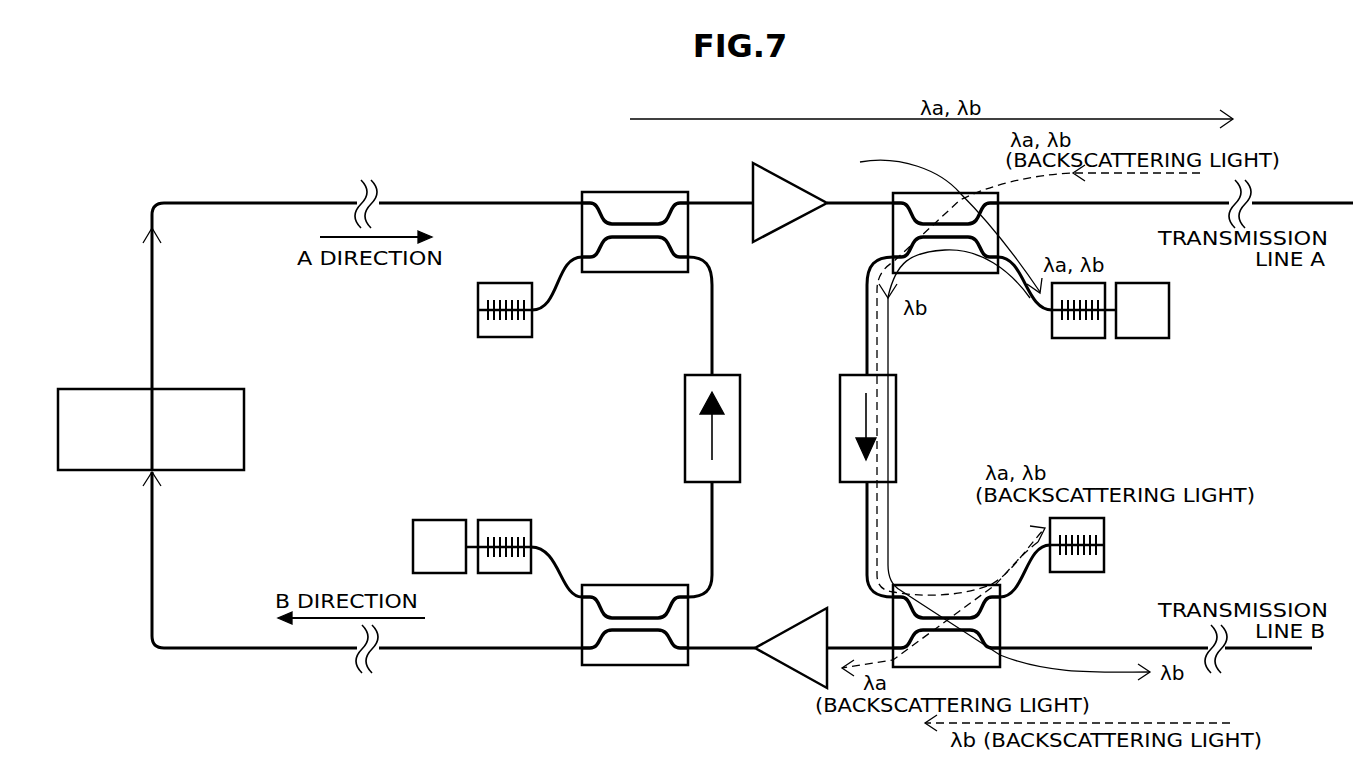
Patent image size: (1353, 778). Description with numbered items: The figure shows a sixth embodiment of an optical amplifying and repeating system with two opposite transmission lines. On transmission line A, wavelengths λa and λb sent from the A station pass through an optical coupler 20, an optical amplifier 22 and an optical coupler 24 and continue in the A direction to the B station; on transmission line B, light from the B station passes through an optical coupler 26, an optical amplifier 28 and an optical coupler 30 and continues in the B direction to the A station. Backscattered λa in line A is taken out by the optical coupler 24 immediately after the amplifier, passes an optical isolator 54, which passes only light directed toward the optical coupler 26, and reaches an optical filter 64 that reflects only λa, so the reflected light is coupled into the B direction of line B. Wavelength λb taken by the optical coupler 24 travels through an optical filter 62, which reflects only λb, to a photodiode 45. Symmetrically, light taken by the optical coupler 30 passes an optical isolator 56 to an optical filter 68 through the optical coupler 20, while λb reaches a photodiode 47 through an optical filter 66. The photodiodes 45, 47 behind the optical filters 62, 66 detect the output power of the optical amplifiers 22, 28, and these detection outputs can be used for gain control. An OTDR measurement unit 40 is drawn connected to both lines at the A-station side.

The optical coupler 20 is at (650, 192).
The optical amplifier 22 is at (790, 170).
The optical coupler 24 is at (960, 273).
The optical coupler 26 is at (940, 585).
The optical amplifier 28 is at (781, 633).
The optical coupler 30 is at (605, 585).
The OTDR measurement unit 40 is at (245, 432).
The photodiode 45 is at (1169, 310).
The photodiode 47 is at (440, 520).
The optical isolator 54 is at (896, 430).
The optical isolator 56 is at (685, 422).
The optical filter 62 is at (1080, 338).
The optical filter 64 is at (1104, 555).
The optical filter 66 is at (503, 520).
The optical filter 68 is at (532, 327).